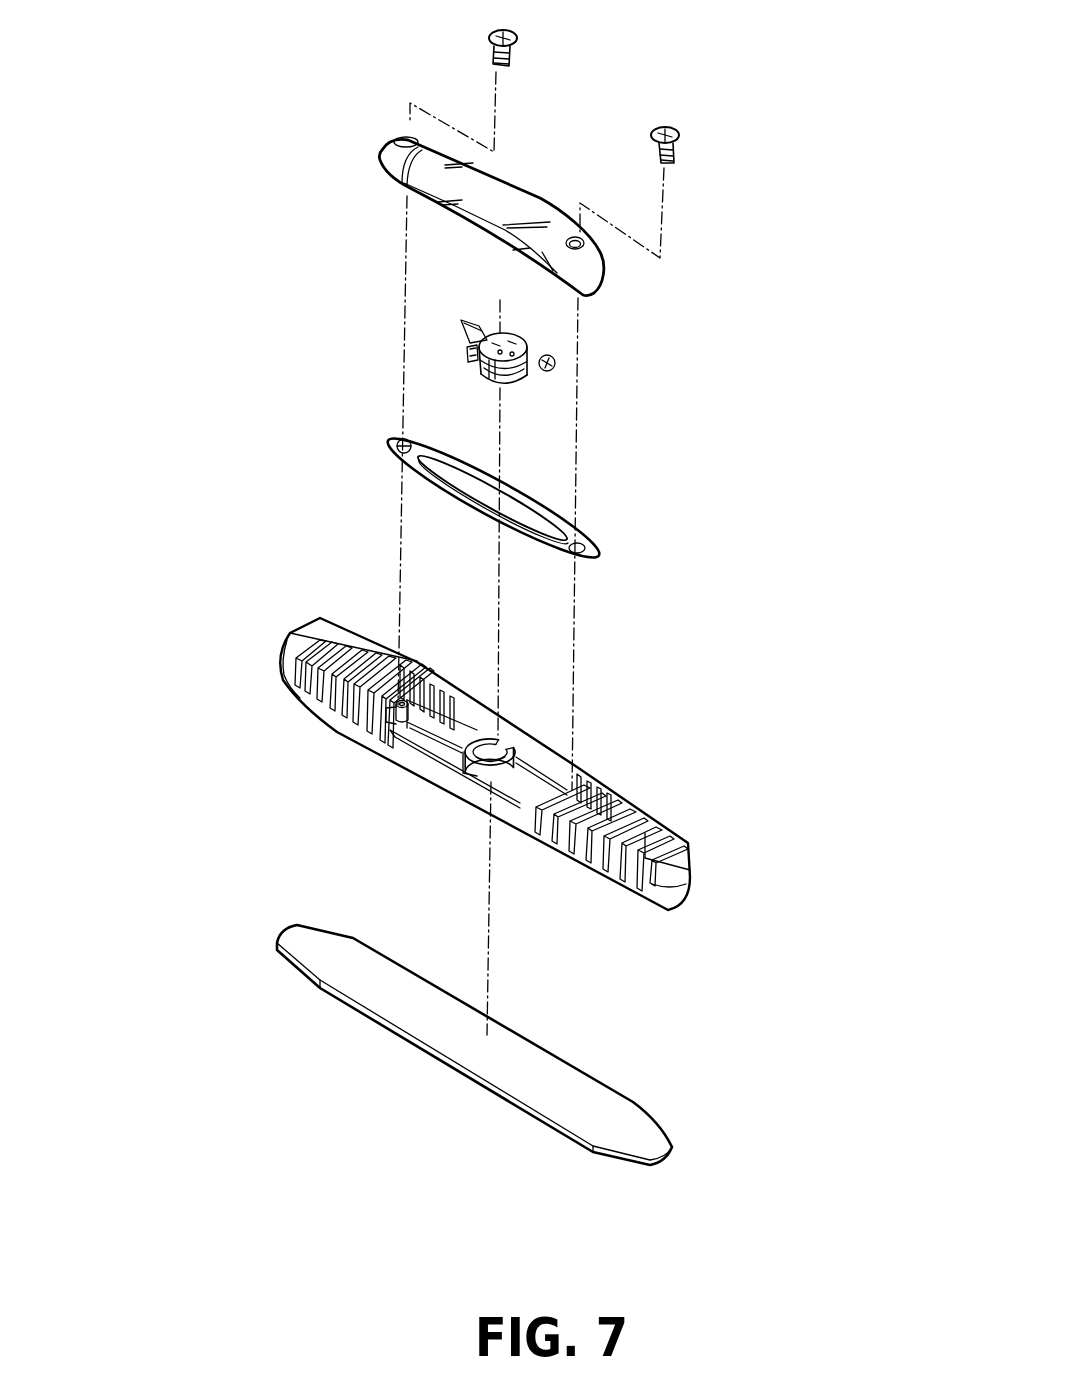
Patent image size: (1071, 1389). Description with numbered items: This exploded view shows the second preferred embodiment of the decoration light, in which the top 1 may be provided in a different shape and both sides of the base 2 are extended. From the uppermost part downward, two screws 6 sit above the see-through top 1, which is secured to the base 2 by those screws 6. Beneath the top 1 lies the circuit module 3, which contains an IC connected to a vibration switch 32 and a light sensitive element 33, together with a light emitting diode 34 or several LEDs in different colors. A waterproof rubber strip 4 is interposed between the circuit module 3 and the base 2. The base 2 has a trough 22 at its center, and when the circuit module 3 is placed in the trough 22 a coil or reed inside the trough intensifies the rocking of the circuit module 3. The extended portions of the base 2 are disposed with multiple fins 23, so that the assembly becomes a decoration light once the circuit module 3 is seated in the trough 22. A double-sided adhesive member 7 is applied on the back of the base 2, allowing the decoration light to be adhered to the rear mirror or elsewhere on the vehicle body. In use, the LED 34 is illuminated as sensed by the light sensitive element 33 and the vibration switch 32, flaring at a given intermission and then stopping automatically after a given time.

The top 1 is at (540, 200).
The base 2 is at (440, 773).
The circuit module 3 is at (477, 370).
The waterproof rubber strip 4 is at (397, 463).
The screw 6 is at (488, 40).
The double-sided adhesive member 7 is at (460, 1073).
The trough 22 is at (490, 738).
The fins 23 is at (337, 623).
The vibration switch 32 is at (463, 322).
The light sensitive element 33 is at (553, 363).
The light emitting diode (LED) 34 is at (518, 388).